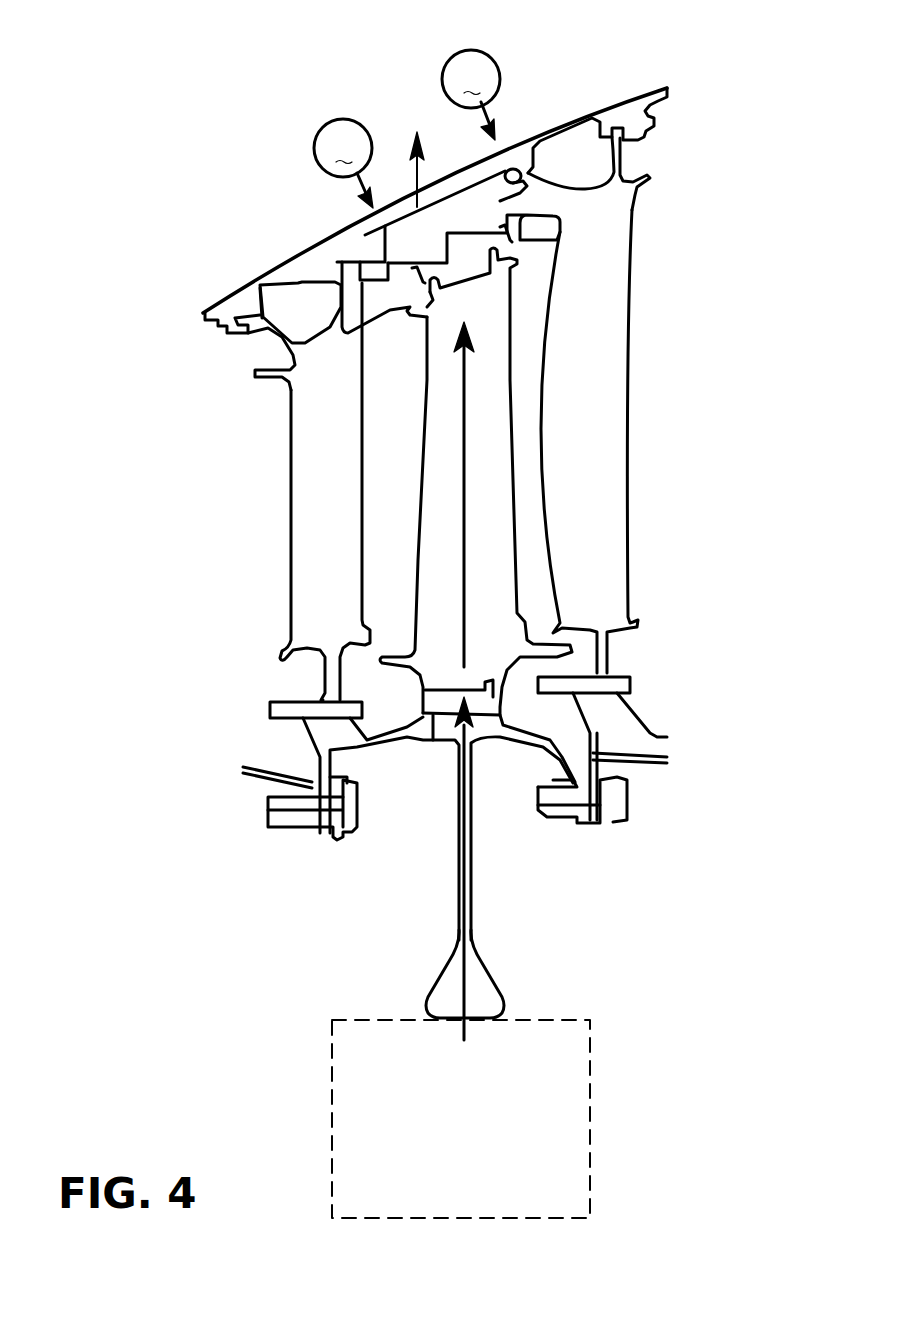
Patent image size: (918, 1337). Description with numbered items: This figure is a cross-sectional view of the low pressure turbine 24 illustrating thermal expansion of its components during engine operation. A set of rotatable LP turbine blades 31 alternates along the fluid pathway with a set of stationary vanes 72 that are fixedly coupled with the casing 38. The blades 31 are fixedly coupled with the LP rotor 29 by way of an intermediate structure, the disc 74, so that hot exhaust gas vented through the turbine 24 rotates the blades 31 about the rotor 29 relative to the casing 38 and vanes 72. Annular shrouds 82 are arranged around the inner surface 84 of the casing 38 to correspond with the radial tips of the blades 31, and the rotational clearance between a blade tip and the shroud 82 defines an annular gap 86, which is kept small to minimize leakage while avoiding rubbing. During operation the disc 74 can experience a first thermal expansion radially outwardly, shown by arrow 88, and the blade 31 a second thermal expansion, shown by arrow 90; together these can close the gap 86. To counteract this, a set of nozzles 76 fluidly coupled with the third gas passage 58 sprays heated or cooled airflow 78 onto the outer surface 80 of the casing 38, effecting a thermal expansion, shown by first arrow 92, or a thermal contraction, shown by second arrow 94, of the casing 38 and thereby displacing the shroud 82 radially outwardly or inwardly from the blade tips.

The LP turbine 24 is at (718, 150).
The LP rotor 29 is at (459, 1174).
The LP turbine blades 31 is at (478, 505).
The casing 38 is at (353, 250).
The third gas passage 58 is at (407, 129).
The stationary vanes 72 is at (315, 440).
The disc 74 is at (472, 973).
The nozzles 76 is at (437, 98).
The airflow 78 is at (363, 187).
The outer surface 80 is at (280, 262).
The annular shrouds 82 is at (515, 202).
The inner surface 84 is at (277, 290).
The annular gap 86 is at (517, 237).
The first thermal expansion 88 is at (467, 872).
The second thermal expansion 90 is at (467, 447).
The thermal expansion of the casing 92 is at (417, 180).
The thermal contraction of the casing 94 is at (515, 168).